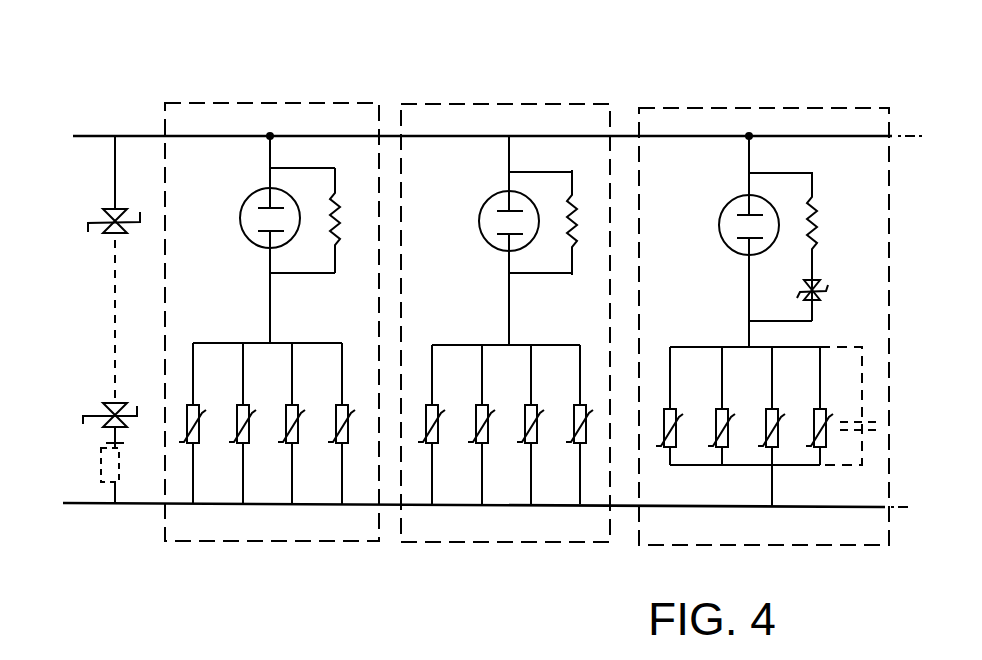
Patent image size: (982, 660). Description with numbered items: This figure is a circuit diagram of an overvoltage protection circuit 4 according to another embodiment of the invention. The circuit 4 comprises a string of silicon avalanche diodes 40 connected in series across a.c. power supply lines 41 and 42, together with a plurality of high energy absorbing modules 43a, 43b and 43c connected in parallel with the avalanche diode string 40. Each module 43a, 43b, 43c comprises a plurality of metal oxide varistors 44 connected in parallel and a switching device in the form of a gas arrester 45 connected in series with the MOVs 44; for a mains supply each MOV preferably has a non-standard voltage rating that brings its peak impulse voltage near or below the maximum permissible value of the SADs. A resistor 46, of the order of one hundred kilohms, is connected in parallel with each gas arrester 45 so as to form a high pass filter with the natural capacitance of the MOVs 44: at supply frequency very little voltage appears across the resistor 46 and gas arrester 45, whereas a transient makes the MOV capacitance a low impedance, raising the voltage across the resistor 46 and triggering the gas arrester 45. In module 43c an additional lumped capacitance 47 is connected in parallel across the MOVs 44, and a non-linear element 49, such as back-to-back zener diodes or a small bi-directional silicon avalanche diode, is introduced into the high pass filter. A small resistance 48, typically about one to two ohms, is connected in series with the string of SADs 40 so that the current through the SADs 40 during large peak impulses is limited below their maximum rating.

The circuit 4 is at (190, 551).
The silicon avalanche diodes 40 is at (97, 240).
The a.c. power supply line 41 is at (127, 135).
The a.c. power supply line 42 is at (63, 503).
The high energy absorbing module 43a is at (201, 92).
The high energy absorbing module 43b is at (426, 92).
The high energy absorbing module 43c is at (662, 96).
The metal oxide varistors 44 is at (233, 397).
The gas arrester 45 is at (248, 197).
The resistor 46 is at (345, 216).
The lumped capacitance 47 is at (868, 413).
The resistance 48 is at (101, 460).
The non-linear element 49 is at (838, 281).